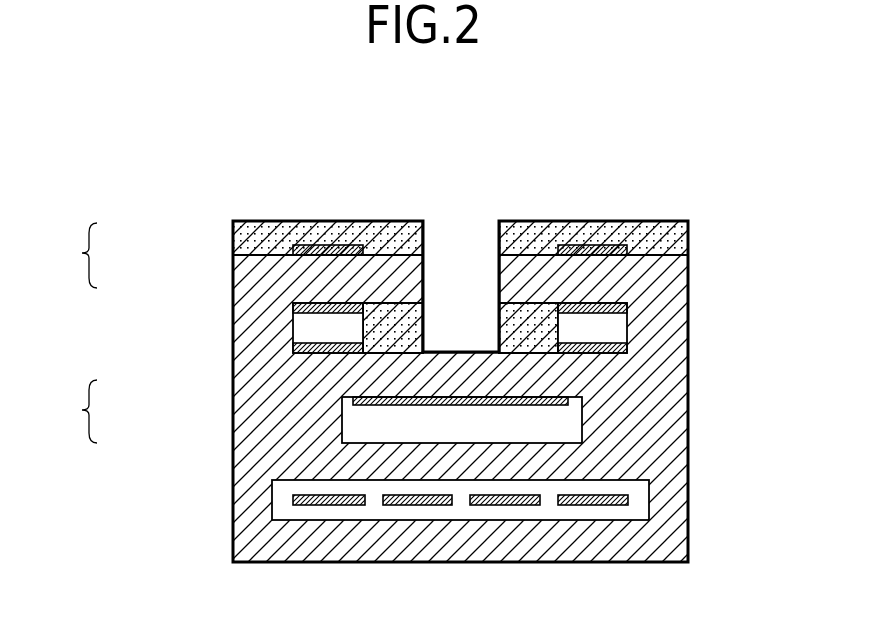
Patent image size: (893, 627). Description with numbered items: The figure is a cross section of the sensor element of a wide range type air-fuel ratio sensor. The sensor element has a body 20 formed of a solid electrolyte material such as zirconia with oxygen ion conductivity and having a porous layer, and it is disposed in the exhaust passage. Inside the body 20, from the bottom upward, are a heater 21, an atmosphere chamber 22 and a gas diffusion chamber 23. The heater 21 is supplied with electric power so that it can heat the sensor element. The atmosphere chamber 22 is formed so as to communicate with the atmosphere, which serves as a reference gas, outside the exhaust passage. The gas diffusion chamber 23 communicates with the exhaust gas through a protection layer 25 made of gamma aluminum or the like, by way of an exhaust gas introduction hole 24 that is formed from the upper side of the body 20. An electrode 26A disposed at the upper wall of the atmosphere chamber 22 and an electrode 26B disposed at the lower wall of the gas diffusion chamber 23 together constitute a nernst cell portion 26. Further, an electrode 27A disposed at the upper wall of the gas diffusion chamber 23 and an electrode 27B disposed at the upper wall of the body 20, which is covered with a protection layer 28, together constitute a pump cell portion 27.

The body 20 is at (688, 535).
The heater 21 is at (628, 498).
The atmosphere chamber 22 is at (557, 428).
The gas diffusion chamber 23 is at (608, 325).
The exhaust gas introduction hole 24 is at (460, 287).
The protection layer 25 is at (502, 332).
The nernst cell portion 26 is at (302, 396).
The electrode 26A is at (400, 405).
The electrode 26B is at (312, 348).
The pump cell portion 27 is at (201, 282).
The electrode 27A is at (297, 246).
The electrode 27B is at (300, 315).
The protection layer 28 is at (593, 230).